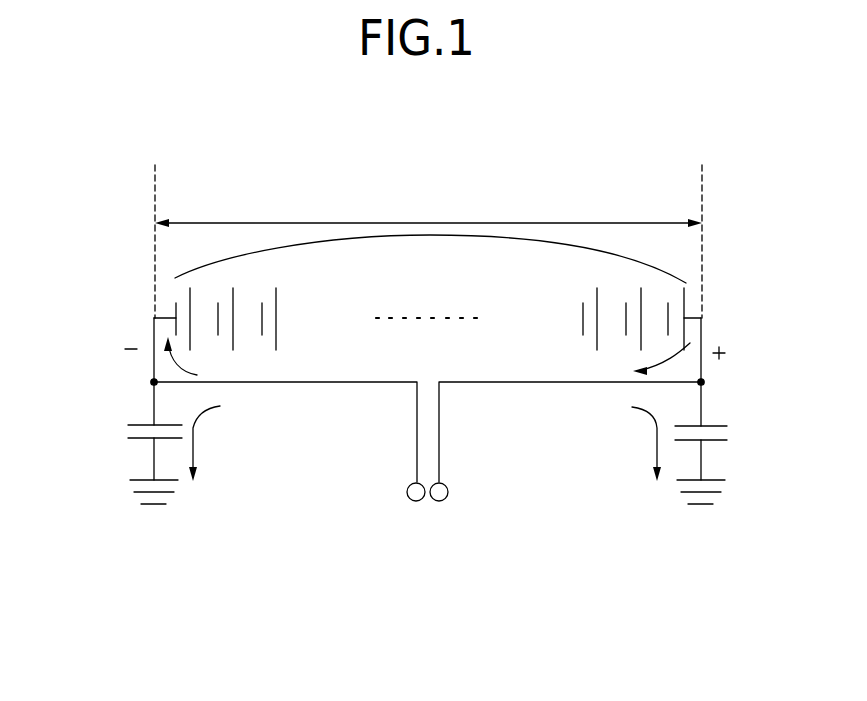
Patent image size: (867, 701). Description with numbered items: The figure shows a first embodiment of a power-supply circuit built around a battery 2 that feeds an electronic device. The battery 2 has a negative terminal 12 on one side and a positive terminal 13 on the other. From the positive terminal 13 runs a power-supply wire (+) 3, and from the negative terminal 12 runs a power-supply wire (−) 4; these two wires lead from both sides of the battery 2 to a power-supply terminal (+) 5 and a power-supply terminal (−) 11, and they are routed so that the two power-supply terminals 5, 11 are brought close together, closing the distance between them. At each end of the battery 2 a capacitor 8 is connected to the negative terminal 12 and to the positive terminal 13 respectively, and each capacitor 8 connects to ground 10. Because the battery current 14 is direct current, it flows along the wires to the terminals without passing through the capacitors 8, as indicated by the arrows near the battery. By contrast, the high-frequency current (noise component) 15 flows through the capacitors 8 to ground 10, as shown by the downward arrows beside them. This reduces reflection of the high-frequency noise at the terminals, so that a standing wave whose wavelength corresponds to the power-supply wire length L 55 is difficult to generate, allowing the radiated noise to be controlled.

The length of the power-supply wire L 55 is at (500, 223).
The battery 2 is at (605, 248).
The negative terminal 12 is at (150, 382).
The positive terminal 13 is at (705, 382).
The power-supply wire (−) 4 is at (350, 383).
The power-supply wire (+) 3 is at (540, 383).
The power-supply terminal (−) 11 is at (405, 493).
The power-supply terminal (+) 5 is at (449, 492).
The capacitor 8 is at (125, 428).
The ground 10 is at (130, 480).
The high-frequency current (noise component) 15 is at (193, 438).
The battery current 14 is at (197, 375).